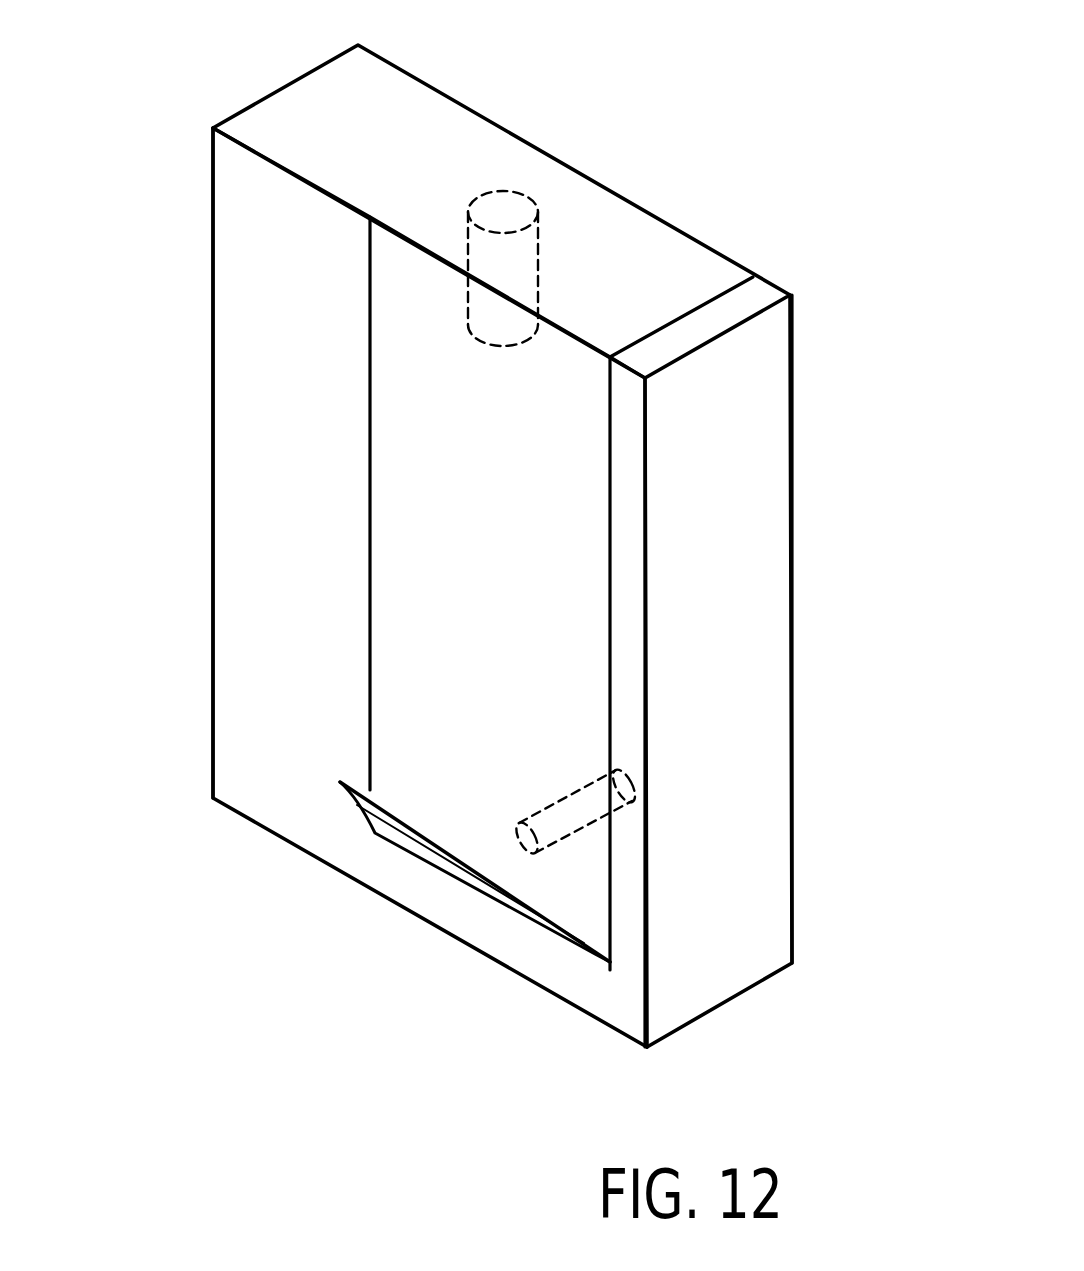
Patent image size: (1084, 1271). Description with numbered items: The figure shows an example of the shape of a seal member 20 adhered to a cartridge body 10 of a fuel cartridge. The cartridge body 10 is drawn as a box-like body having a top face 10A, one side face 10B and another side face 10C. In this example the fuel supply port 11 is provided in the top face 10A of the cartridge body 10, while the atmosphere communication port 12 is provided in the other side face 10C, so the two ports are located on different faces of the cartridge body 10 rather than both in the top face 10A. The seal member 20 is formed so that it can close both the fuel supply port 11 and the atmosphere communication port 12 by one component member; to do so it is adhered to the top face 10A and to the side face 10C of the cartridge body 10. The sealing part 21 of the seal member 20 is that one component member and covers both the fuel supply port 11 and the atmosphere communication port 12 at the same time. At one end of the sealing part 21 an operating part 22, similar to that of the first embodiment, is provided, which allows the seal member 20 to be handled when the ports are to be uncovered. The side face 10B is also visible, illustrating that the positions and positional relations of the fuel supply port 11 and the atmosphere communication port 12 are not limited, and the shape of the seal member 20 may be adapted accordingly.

The cartridge body 10 is at (500, 526).
The top face 10A is at (365, 68).
The side face 10B is at (773, 527).
The side face 10C is at (247, 493).
The fuel supply port 11 is at (512, 191).
The atmosphere communication port 12 is at (617, 830).
The seal member 20 is at (439, 939).
The sealing part 21 is at (448, 808).
The operating part 22 is at (517, 903).